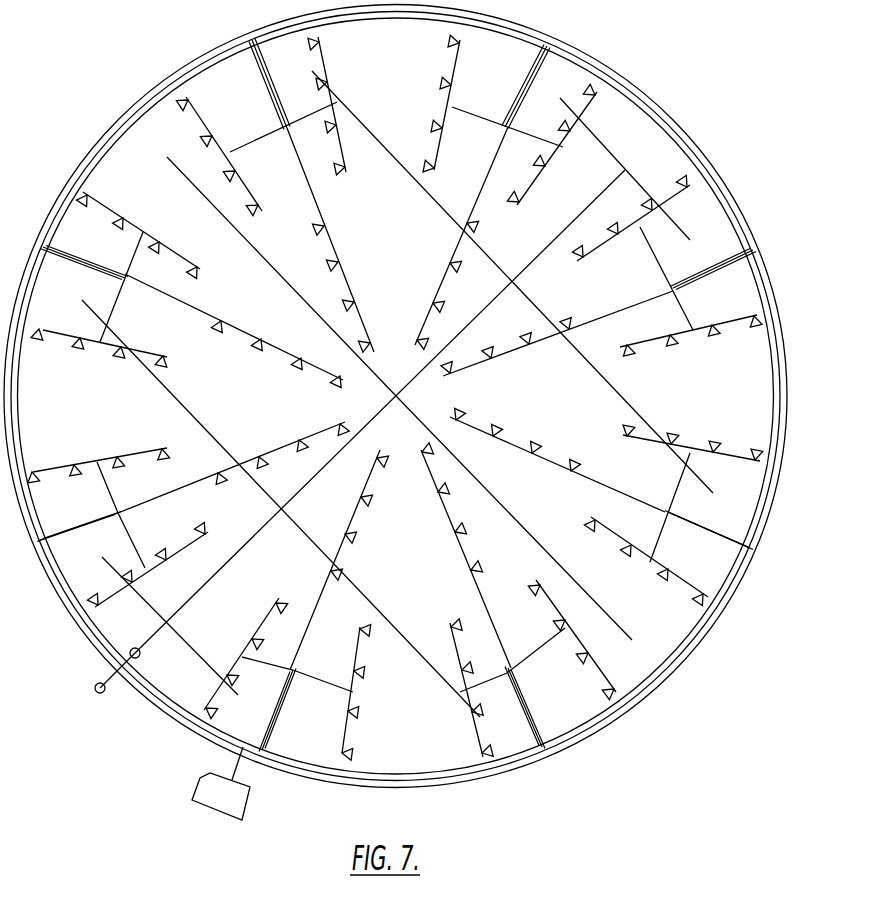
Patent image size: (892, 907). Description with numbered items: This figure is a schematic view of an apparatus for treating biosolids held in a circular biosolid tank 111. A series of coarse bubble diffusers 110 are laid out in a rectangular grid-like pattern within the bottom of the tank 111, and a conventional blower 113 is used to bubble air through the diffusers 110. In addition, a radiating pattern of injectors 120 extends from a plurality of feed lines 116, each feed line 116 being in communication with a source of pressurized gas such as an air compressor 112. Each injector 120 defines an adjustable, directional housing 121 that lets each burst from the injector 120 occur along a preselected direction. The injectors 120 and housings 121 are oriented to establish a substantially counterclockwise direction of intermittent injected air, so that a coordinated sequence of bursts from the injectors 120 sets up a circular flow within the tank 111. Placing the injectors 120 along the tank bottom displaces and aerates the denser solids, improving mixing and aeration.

The coarse bubble diffusers 110 is at (378, 607).
The circular biosolid tank 111 is at (648, 98).
The air compressor 112 is at (232, 797).
The blower 113 is at (100, 682).
The feed lines 116 is at (350, 285).
The injectors 120 is at (753, 313).
The adjustable directional housing 121 is at (747, 250).